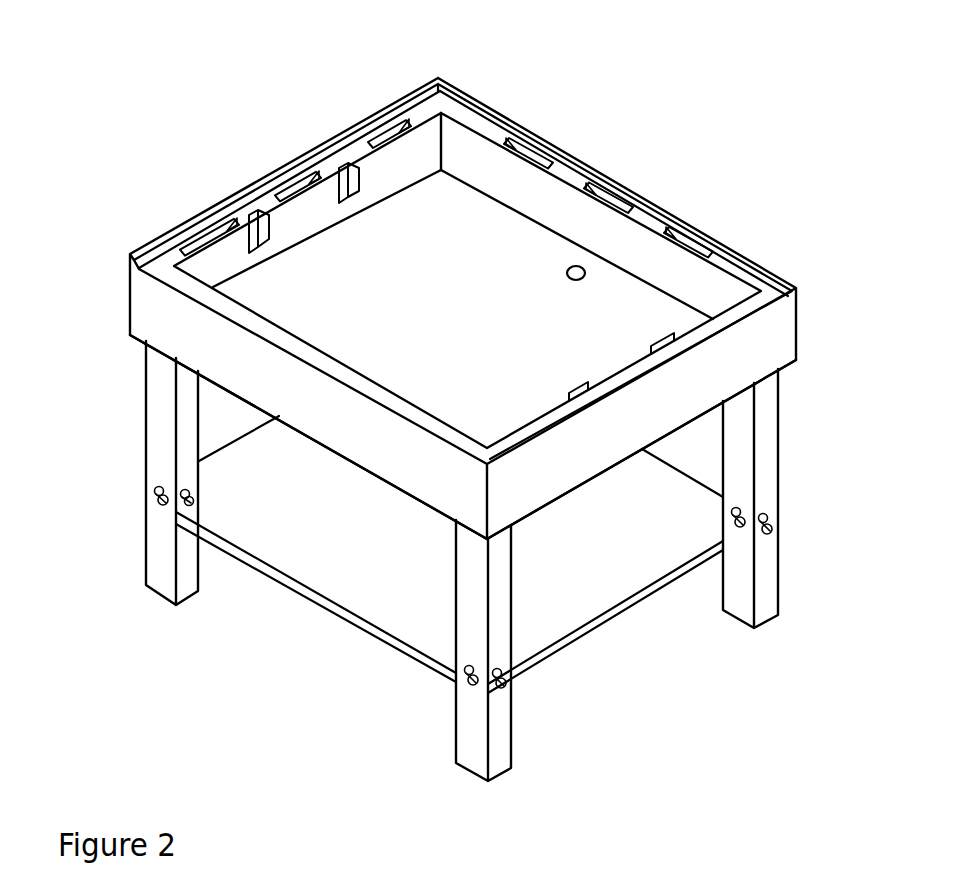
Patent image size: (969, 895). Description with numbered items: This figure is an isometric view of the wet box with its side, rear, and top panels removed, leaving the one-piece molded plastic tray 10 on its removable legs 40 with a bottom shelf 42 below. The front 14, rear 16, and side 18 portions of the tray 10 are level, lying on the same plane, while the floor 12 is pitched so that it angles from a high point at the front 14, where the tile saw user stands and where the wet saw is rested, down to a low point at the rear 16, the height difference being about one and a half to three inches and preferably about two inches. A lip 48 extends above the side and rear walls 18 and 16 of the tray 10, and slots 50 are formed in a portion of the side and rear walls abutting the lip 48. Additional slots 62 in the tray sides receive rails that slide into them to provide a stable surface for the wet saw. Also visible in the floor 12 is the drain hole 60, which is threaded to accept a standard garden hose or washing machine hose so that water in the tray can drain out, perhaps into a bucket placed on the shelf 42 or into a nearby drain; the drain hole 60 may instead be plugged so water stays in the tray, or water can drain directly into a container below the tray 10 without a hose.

The tray 10 is at (187, 327).
The floor 12 is at (492, 230).
The front 14 is at (232, 366).
The rear 16 is at (528, 130).
The side 18 is at (257, 210).
The removable legs 40 is at (770, 572).
The bottom shelf 42 is at (593, 633).
The lip 48 is at (188, 229).
The slots 50 is at (396, 112).
The drain hole 60 is at (580, 266).
The slots 62 is at (346, 152).